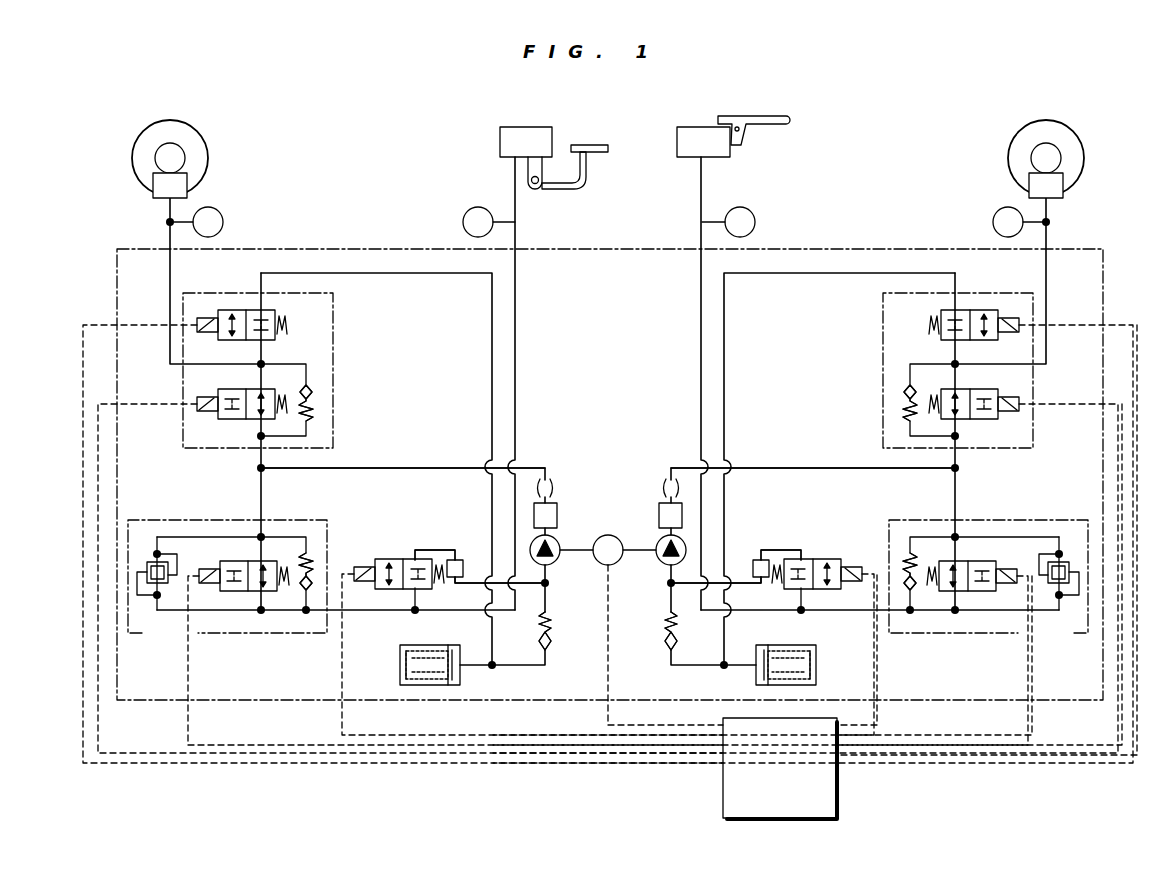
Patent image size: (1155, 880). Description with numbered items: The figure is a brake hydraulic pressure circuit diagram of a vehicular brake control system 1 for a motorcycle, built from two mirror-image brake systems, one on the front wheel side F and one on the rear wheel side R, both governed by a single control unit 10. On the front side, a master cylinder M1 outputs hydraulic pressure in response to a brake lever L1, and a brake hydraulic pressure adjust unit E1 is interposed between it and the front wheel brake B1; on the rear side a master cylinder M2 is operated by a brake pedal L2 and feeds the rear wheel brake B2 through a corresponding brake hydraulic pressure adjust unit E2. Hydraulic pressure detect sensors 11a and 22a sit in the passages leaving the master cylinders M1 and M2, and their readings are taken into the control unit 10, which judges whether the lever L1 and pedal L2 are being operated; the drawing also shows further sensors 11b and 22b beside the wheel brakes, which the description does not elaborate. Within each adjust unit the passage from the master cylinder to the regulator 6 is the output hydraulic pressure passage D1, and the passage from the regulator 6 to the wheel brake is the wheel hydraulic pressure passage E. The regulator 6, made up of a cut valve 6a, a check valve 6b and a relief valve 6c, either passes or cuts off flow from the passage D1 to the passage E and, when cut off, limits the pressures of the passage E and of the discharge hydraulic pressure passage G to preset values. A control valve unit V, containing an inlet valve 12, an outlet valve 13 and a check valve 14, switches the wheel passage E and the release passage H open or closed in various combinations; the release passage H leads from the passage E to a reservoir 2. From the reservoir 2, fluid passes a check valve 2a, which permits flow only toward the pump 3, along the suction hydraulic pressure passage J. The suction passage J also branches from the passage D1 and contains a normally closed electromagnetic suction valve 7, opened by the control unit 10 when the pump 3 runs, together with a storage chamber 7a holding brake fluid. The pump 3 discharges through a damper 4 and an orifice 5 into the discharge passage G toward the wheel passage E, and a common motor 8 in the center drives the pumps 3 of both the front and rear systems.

The vehicular brake control system 1 is at (936, 112).
The reservoir 2 is at (400, 665).
The check valve 2a is at (546, 640).
The pump 3 is at (552, 568).
The damper 4 is at (557, 516).
The orifice 5 is at (555, 488).
The regulator 6 is at (166, 520).
The cut valve 6a is at (238, 592).
The check valve 6b is at (316, 562).
The relief valve 6c is at (168, 586).
The suction valve 7 is at (400, 558).
The storage chamber 7a is at (455, 556).
The common motor 8 is at (604, 566).
The control unit 10 is at (723, 792).
The hydraulic pressure detect sensor 11a is at (755, 222).
The pressure sensor 11b is at (993, 222).
The inlet valve 12 is at (232, 420).
The outlet valve 13 is at (226, 309).
The check valve 14 is at (316, 408).
The hydraulic pressure detect sensor 22a is at (463, 222).
The pressure sensor 22b is at (223, 222).
The front wheel brake B1 is at (1006, 162).
The rear wheel brake B2 is at (210, 162).
The master cylinder M1 is at (692, 157).
The master cylinder M2 is at (500, 138).
The brake lever L1 is at (774, 130).
The brake pedal L2 is at (588, 189).
The wheel hydraulic pressure passage E is at (170, 285).
The brake hydraulic pressure adjust unit E1 is at (872, 248).
The brake hydraulic pressure adjust unit E2 is at (338, 248).
The front wheel side F is at (842, 134).
The rear wheel side R is at (398, 134).
The control valve unit V is at (183, 389).
The release passage H is at (424, 276).
The discharge hydraulic pressure passage G is at (420, 466).
The output hydraulic pressure passage D1 is at (515, 326).
The suction hydraulic pressure passage J is at (480, 578).